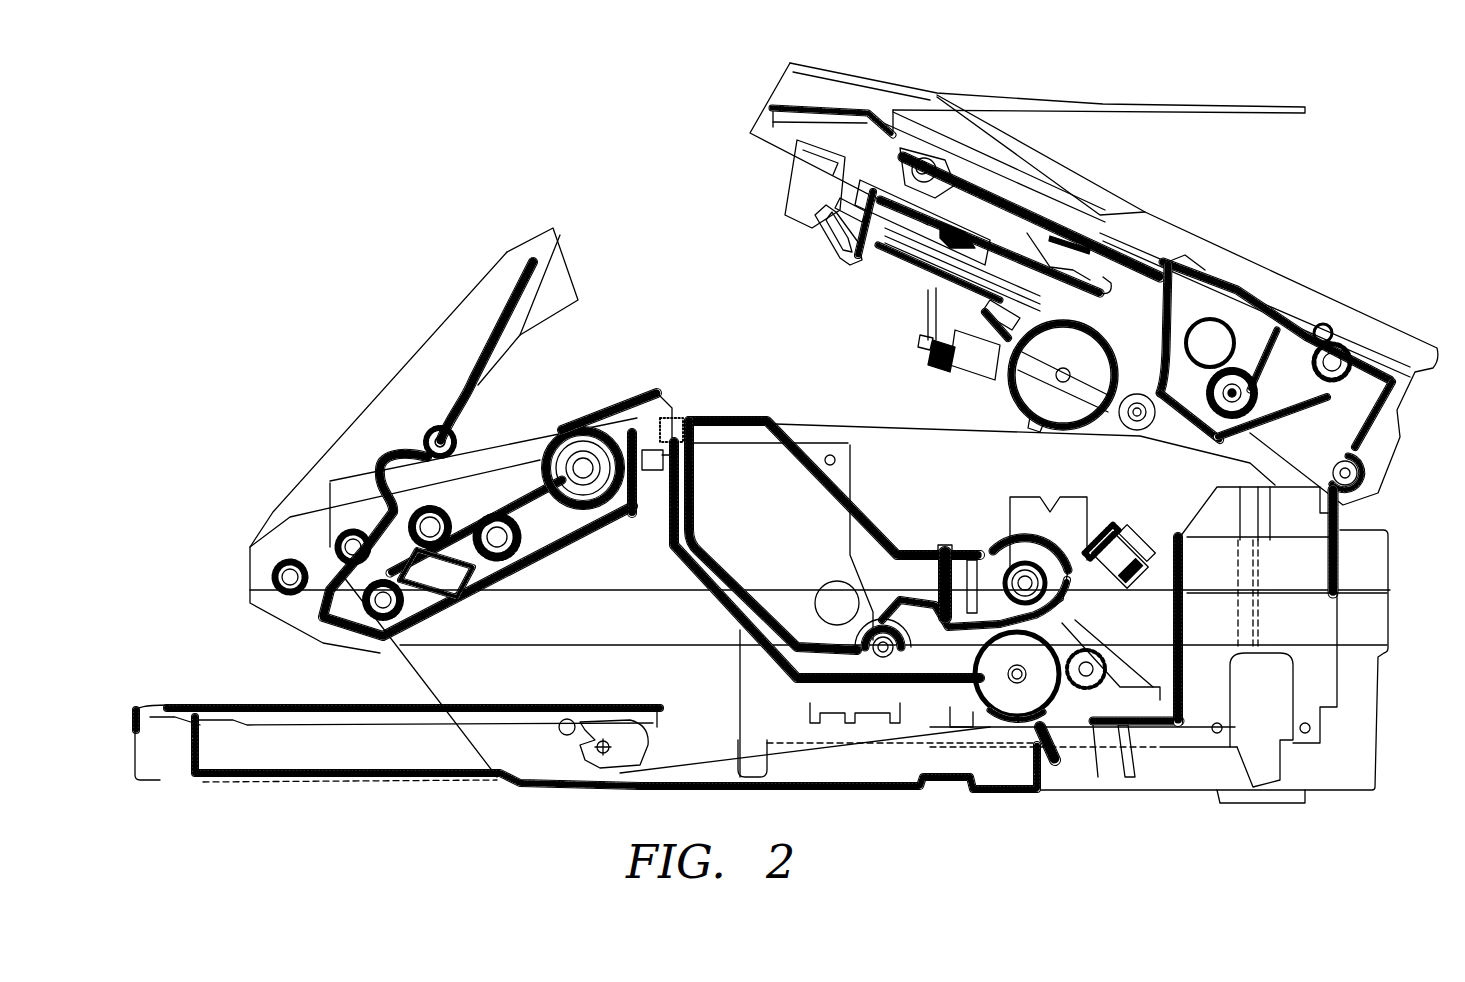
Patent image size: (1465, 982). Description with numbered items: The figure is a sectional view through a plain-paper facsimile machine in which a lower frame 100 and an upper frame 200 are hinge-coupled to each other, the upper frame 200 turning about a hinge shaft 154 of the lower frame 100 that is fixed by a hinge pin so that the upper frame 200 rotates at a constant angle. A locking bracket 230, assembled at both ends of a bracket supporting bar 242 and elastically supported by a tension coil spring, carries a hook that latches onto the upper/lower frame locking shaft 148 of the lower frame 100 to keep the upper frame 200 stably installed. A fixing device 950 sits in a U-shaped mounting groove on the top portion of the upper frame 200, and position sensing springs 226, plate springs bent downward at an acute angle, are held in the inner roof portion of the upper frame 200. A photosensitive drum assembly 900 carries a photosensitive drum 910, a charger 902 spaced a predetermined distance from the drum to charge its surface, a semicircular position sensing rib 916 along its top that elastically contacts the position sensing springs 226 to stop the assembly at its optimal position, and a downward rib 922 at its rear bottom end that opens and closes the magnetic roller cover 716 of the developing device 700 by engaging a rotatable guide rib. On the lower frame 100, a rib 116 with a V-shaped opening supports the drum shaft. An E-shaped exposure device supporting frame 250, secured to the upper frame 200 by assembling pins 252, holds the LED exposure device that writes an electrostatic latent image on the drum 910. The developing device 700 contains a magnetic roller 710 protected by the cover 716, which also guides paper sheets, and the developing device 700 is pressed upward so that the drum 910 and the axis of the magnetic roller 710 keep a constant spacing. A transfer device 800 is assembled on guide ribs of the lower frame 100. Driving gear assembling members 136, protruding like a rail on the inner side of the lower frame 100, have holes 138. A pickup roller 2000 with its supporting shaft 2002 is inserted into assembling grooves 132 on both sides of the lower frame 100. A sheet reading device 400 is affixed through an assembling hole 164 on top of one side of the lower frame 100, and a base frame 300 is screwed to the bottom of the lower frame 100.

The lower frame 100 is at (672, 538).
The rib 116 is at (1068, 503).
The assembling groove 132 is at (965, 667).
The driving gear assembling members 136 is at (1255, 568).
The holes 138 is at (1260, 513).
The upper/lower frame locking shaft 148 is at (840, 457).
The hinge shaft 154 is at (1362, 476).
The assembling hole 164 is at (670, 413).
The upper frame 200 is at (1298, 274).
The position sensing springs 226 is at (1048, 243).
The locking bracket 230 is at (845, 258).
The bracket supporting bar 242 is at (926, 160).
The exposure device supporting frame 250 is at (968, 382).
The assembling pins 252 is at (1137, 418).
The base frame 300 is at (1380, 630).
The sheet reading device 400 is at (420, 335).
The developing device 700 is at (740, 413).
The magnetic roller 710 is at (1017, 552).
The magnetic roller cover 716 is at (1030, 565).
The transfer device 800 is at (1115, 525).
The photosensitive drum assembly 900 is at (905, 253).
The charger 902 is at (950, 302).
The photosensitive drum 910 is at (1017, 407).
The position sensing rib 916 is at (1040, 253).
The rib 922 is at (1040, 470).
The fixing device 950 is at (1233, 287).
The pickup roller 2000 is at (1070, 747).
The supporting shaft 2002 is at (1020, 692).